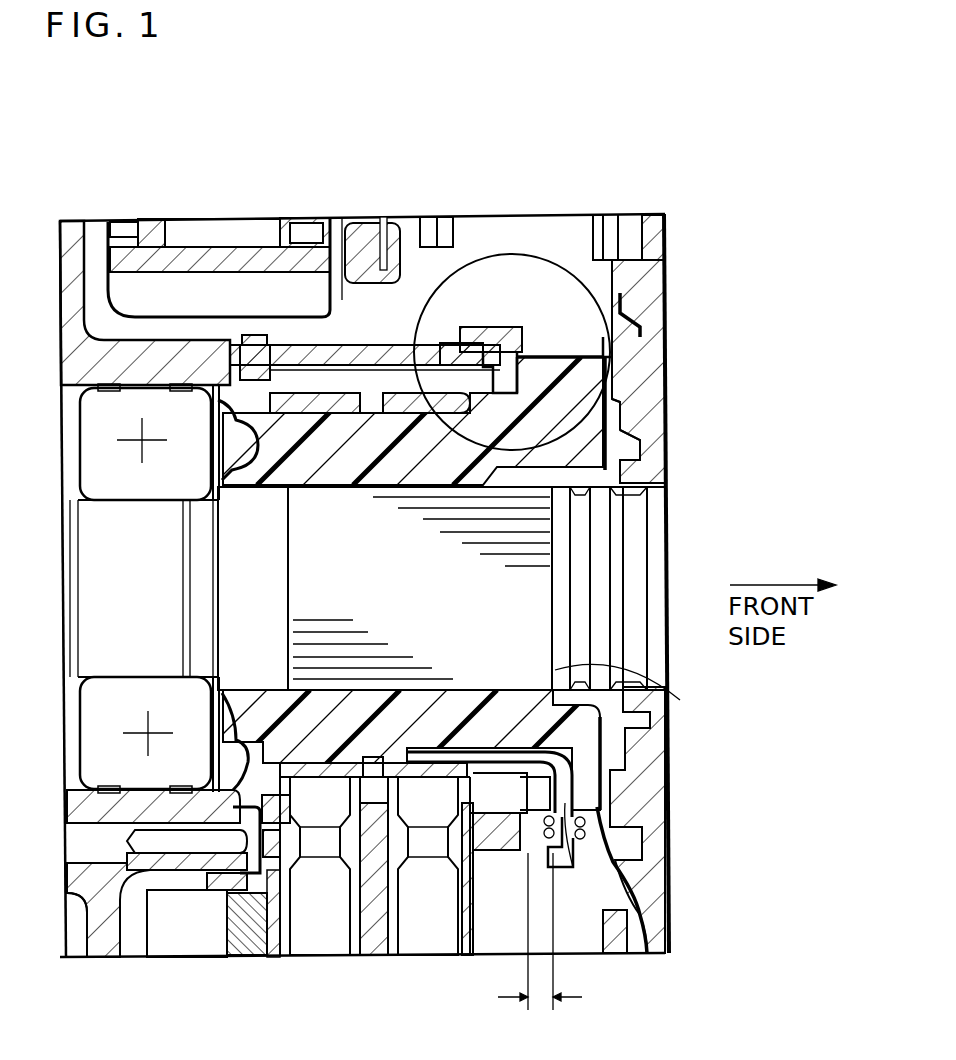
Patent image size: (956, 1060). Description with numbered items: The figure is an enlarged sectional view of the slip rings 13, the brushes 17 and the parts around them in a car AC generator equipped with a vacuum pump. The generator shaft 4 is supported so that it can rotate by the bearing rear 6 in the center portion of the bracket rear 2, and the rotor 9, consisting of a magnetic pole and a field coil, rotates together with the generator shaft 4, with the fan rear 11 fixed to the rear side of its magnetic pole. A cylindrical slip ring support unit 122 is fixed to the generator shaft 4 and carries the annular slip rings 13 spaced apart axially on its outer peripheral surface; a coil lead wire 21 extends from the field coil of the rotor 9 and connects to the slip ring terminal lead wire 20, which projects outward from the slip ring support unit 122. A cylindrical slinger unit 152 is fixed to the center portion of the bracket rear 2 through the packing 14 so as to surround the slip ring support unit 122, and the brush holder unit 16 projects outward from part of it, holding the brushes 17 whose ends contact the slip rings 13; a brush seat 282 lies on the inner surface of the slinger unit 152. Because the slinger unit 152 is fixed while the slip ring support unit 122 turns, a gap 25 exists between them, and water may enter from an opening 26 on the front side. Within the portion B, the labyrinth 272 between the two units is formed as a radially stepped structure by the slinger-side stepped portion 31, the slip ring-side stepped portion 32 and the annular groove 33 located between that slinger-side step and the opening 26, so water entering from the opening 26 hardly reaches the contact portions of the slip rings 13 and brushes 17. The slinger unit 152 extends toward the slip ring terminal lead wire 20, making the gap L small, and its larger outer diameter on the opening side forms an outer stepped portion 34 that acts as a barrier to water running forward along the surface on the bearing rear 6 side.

The bracket rear 2 is at (72, 242).
The packing 14 is at (252, 335).
The slinger unit 152 is at (280, 355).
The gap 25 is at (342, 390).
The slip rings 13 is at (403, 330).
The outer stepped portion 34 is at (478, 352).
The slinger-side stepped portion 31 is at (505, 350).
The labyrinth 272 is at (555, 357).
The portion B is at (580, 198).
The opening 26 is at (625, 282).
The slip ring-side stepped portion 32 is at (628, 368).
The annular groove 33 is at (600, 408).
The slip ring support unit 122 is at (643, 452).
The bearing rear 6 is at (97, 462).
The generator shaft 4 is at (530, 655).
The rotor 9 is at (640, 795).
The coil lead wire 21 is at (655, 873).
The brushes 17 is at (305, 925).
The brush seat 282 is at (343, 905).
The brush holder unit 16 is at (375, 920).
The slip ring terminal lead wire 20 is at (553, 870).
The fan rear 11 is at (607, 940).
The gap L' L is at (540, 950).